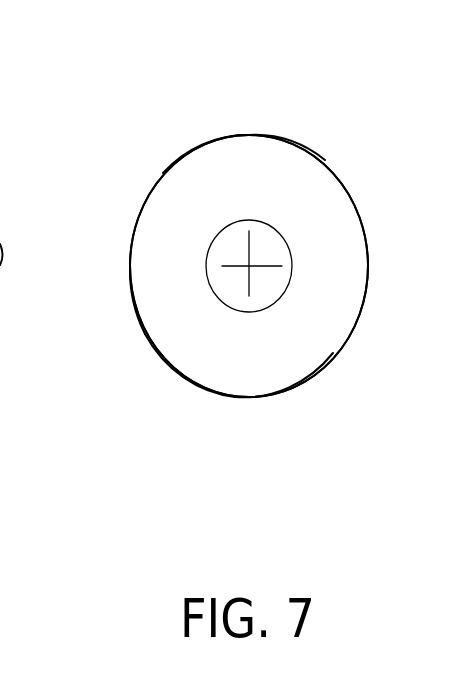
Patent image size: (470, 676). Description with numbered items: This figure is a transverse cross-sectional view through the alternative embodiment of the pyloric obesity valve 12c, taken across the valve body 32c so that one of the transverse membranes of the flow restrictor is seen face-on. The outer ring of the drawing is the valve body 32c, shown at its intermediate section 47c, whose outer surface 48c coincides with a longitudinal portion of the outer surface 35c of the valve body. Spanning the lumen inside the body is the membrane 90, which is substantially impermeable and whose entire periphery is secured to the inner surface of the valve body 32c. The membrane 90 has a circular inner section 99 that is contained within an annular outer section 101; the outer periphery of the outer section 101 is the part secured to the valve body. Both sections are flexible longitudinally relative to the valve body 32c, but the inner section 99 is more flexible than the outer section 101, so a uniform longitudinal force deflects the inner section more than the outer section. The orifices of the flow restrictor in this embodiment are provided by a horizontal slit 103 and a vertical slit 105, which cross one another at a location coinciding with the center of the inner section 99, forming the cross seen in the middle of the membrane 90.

The transverse membrane 90 is at (240, 133).
The valve body 32c is at (162, 172).
The intermediate section 47c is at (326, 159).
The outer surface of intermediate section 48c is at (333, 353).
The pyloric obesity valve 12c is at (144, 335).
The outer surface of valve body 35c is at (235, 396).
The outer section 101 is at (345, 285).
The horizontal slit 103 is at (263, 266).
The vertical slit 105 is at (247, 250).
The inner section 99 is at (223, 285).